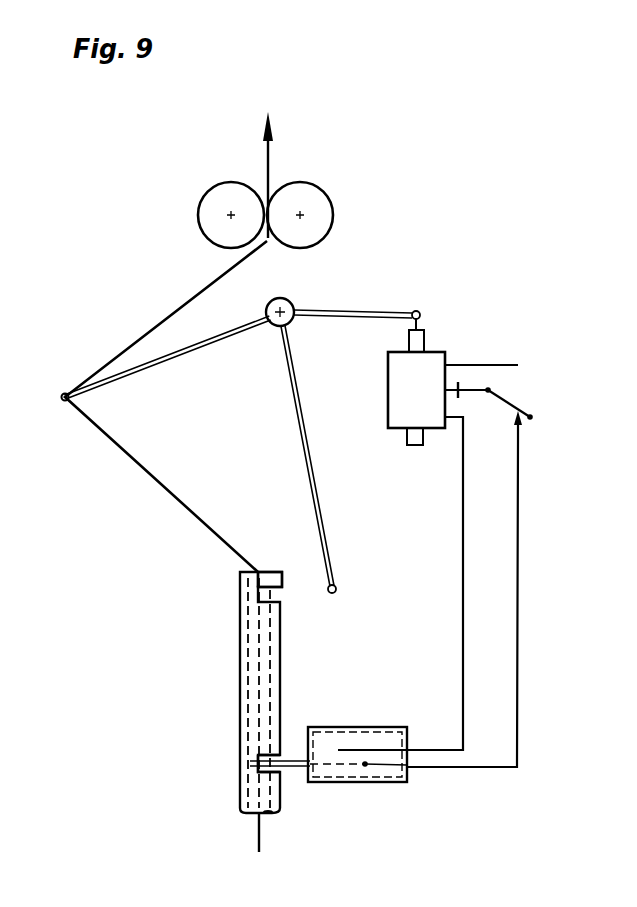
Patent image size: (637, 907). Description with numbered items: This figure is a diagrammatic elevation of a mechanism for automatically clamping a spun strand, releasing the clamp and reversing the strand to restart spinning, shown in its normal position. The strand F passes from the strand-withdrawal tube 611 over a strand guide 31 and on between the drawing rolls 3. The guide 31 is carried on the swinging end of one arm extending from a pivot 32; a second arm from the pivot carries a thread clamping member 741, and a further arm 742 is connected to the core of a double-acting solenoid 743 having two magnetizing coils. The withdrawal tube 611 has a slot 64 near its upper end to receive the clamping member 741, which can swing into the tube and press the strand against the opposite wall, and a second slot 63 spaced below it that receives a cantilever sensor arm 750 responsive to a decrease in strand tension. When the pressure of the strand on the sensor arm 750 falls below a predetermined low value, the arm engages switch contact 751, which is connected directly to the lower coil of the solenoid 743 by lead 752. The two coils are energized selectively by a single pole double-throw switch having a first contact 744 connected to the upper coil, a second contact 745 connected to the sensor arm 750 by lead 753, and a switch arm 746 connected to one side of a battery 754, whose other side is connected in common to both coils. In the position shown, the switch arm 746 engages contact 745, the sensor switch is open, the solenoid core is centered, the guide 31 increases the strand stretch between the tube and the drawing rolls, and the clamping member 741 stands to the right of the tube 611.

The drawing rolls 3 is at (323, 203).
The strand F is at (180, 298).
The strand guide 31 is at (62, 395).
The pivot 32 is at (288, 302).
The strand-withdrawal tube 611 is at (245, 645).
The second slot 63 is at (252, 760).
The slot 64 is at (268, 572).
The thread clamping member 741 is at (342, 583).
The arm 742 is at (350, 312).
The double-acting solenoid 743 is at (395, 377).
The first contact 744 is at (517, 366).
The second contact 745 is at (521, 418).
The switch arm 746 is at (532, 415).
The cantilever sensor arm 750 is at (281, 758).
The switch contact 751 is at (341, 746).
The lead 752 is at (463, 533).
The lead 753 is at (518, 563).
The battery 754 is at (462, 396).